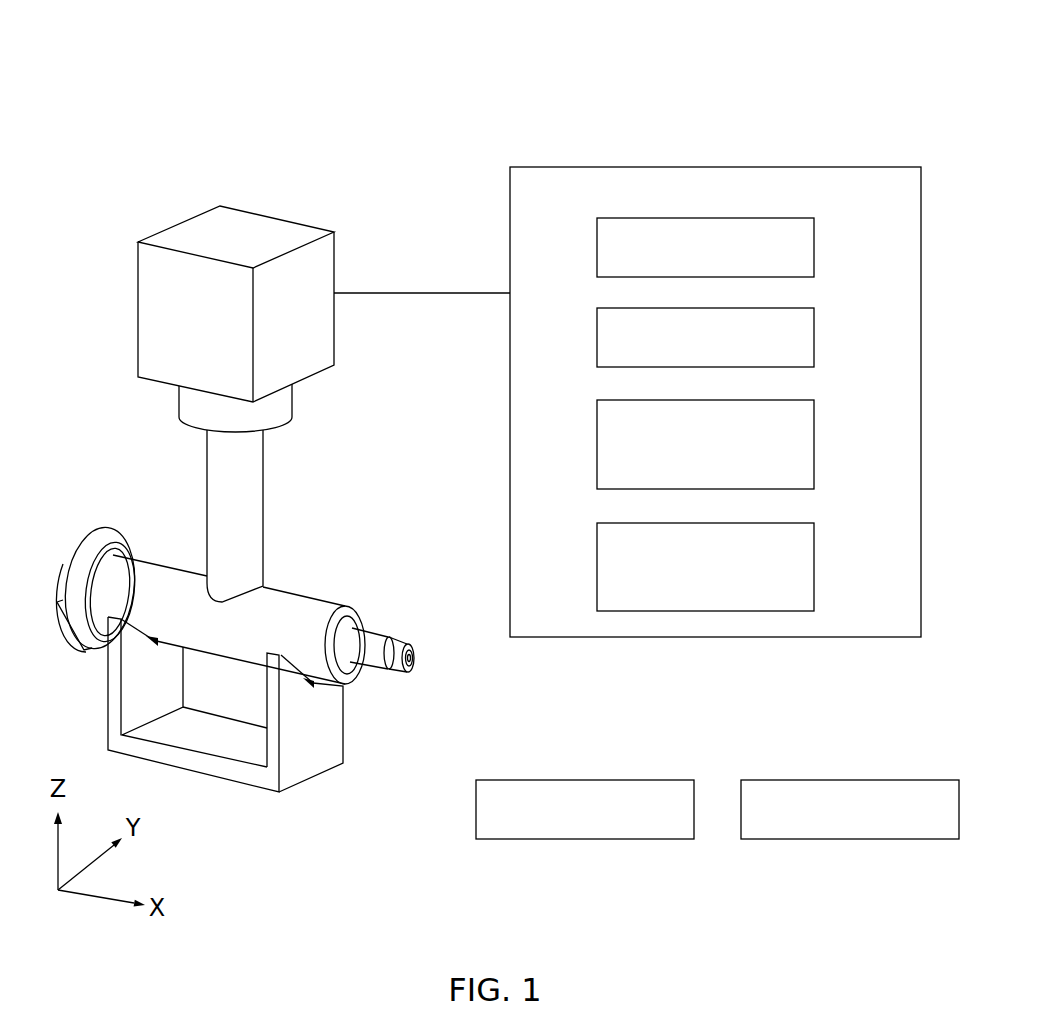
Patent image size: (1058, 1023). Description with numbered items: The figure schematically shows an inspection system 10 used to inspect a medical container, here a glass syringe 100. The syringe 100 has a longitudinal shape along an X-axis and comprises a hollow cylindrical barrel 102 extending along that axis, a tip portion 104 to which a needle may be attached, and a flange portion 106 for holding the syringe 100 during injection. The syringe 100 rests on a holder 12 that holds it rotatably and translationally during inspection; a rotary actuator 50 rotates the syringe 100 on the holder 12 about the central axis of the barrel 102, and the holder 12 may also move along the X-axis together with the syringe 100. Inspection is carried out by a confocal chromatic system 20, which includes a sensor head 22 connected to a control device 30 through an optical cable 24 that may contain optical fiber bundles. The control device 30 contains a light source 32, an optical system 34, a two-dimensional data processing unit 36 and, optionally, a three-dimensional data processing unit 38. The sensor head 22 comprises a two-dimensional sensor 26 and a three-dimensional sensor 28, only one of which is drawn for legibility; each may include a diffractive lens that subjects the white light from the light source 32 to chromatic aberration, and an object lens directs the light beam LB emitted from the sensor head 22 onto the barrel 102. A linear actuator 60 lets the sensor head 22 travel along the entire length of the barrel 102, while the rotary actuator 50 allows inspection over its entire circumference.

The inspection system 10 is at (451, 48).
The holder 12 is at (345, 723).
The confocal chromatic system 20 is at (179, 178).
The sensor head 22 is at (253, 237).
The optical cable 24 is at (428, 292).
The 2D sensor 26 is at (319, 380).
The 3D sensor 28 is at (272, 415).
The control device 30 is at (601, 167).
The light source 32 is at (795, 218).
The optical system 34 is at (807, 308).
The 2D data processing unit 36 is at (807, 400).
The 3D data processing unit 38 is at (807, 523).
The rotary actuator 50 is at (669, 780).
The linear actuator 60 is at (935, 780).
The syringe 100 is at (306, 582).
The barrel 102 is at (187, 588).
The tip portion 104 is at (388, 636).
The flange portion 106 is at (105, 525).
The light beam LB is at (258, 517).